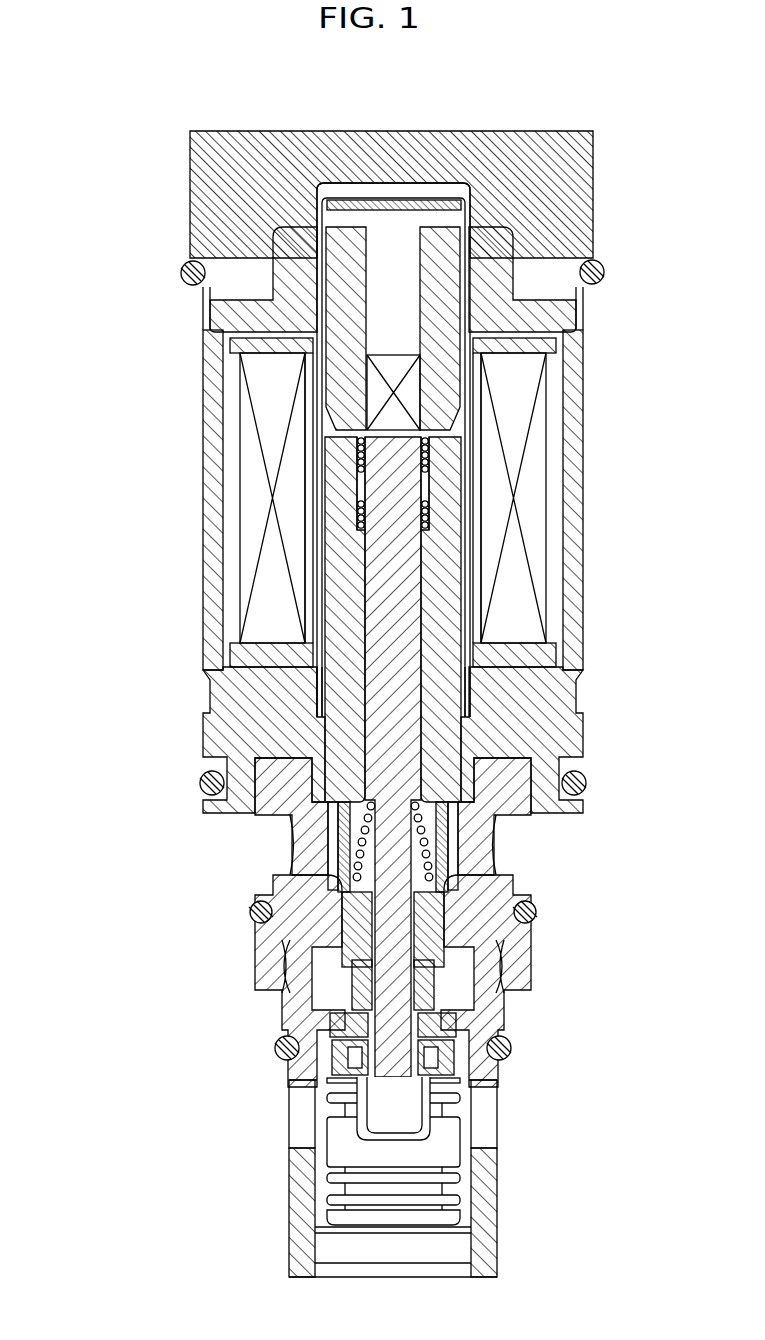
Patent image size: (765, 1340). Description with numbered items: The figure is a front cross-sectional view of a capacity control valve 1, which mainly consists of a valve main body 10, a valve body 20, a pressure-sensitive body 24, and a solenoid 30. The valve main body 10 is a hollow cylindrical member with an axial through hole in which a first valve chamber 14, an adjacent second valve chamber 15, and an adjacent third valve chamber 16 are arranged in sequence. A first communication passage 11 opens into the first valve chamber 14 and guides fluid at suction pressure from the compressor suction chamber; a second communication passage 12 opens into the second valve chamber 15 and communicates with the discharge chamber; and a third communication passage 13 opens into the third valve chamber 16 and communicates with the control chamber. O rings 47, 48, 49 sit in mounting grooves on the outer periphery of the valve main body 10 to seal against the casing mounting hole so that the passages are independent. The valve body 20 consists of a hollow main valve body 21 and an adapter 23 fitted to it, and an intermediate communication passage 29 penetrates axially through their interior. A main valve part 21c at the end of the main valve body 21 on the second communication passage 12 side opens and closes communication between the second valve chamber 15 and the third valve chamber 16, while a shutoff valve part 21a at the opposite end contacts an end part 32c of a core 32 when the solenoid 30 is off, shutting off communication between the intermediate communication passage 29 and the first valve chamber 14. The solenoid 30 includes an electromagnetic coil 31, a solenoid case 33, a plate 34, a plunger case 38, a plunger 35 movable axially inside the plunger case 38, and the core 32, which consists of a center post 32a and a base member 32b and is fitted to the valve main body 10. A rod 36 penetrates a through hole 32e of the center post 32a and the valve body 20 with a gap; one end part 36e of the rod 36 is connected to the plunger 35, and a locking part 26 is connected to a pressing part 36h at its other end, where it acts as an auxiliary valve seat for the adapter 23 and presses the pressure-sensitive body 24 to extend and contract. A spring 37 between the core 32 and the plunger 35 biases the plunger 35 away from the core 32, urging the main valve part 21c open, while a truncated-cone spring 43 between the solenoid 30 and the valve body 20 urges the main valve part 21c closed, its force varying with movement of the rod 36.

The capacity control valve 1 is at (116, 117).
The valve main body 10 is at (314, 1017).
The first communication passage 11 is at (308, 833).
The second communication passage 12 is at (290, 965).
The third communication passage 13 is at (300, 1108).
The first valve chamber 14 is at (335, 860).
The second valve chamber 15 is at (285, 970).
The third valve chamber 16 is at (301, 1159).
The valve body 20 is at (514, 927).
The main valve body 21 is at (495, 914).
The shutoff valve part 21a is at (445, 880).
The main valve part 21c is at (440, 1008).
The adapter 23 is at (455, 1030).
The pressure-sensitive body 24 is at (462, 1135).
The locking part 26 is at (450, 1060).
The intermediate communication passage 29 is at (410, 930).
The solenoid 30 is at (182, 349).
The electromagnetic coil 31 is at (265, 583).
The core 32 is at (359, 648).
The center post 32a is at (330, 700).
The base member 32b is at (235, 740).
The end part 32c is at (530, 818).
The through hole 32e is at (410, 575).
The solenoid case 33 is at (212, 545).
The plate 34 is at (290, 313).
The plunger 35 is at (332, 392).
The rod 36 is at (388, 475).
The one end part 36e is at (405, 380).
The pressing part 36h is at (388, 1072).
The spring 37 is at (363, 492).
The plunger case 38 is at (313, 212).
The spring 43 is at (537, 912).
The O ring 47 is at (200, 783).
The O ring 48 is at (250, 912).
The O ring 49 is at (275, 1048).